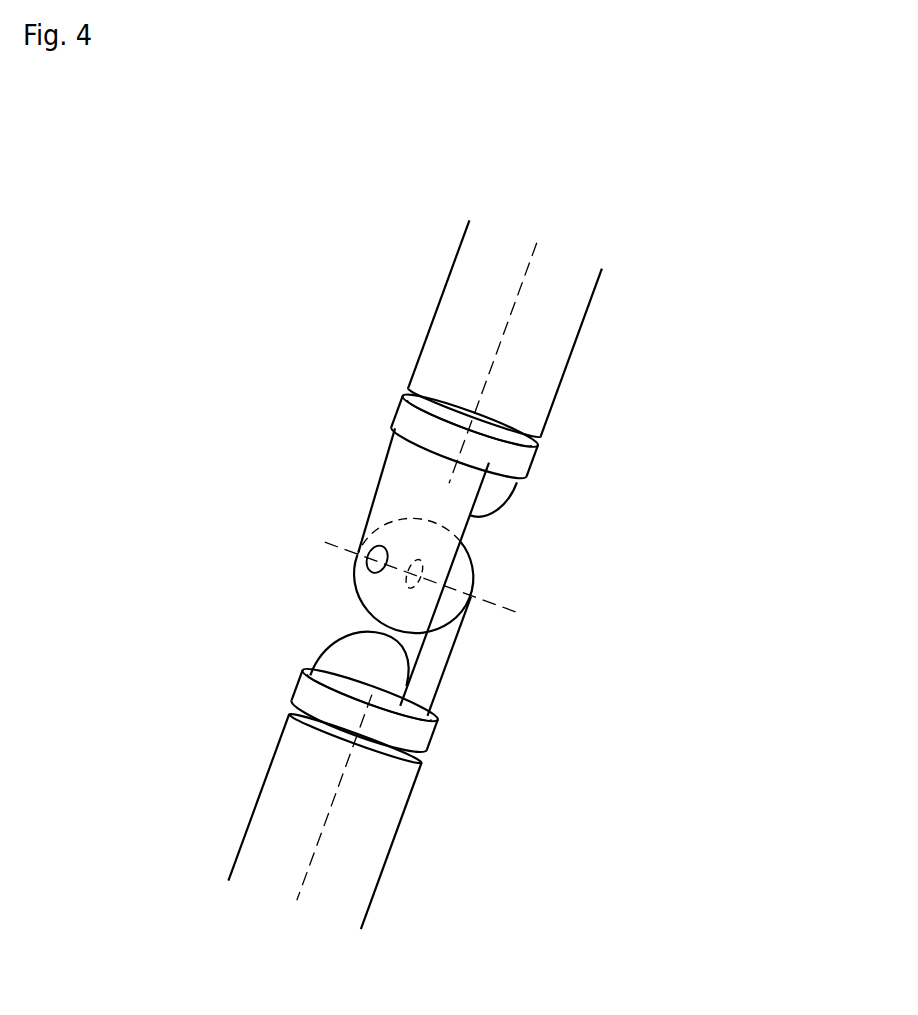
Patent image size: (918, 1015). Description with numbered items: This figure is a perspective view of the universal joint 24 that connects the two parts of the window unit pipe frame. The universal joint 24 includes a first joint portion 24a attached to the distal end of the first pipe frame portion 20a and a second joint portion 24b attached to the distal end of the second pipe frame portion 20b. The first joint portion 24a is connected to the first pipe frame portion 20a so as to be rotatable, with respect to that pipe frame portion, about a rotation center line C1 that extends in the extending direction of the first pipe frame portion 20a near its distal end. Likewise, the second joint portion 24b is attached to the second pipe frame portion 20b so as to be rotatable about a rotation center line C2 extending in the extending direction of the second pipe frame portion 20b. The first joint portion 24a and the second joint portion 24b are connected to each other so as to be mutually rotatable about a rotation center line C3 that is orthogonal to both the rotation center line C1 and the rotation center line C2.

The first pipe frame portion 20a is at (577, 352).
The second pipe frame portion 20b is at (397, 833).
The universal joint 24 is at (388, 574).
The first joint portion 24a is at (392, 470).
The second joint portion 24b is at (452, 648).
The rotation center line C1 is at (502, 337).
The rotation center line C2 is at (313, 857).
The rotation center line C3 is at (503, 600).